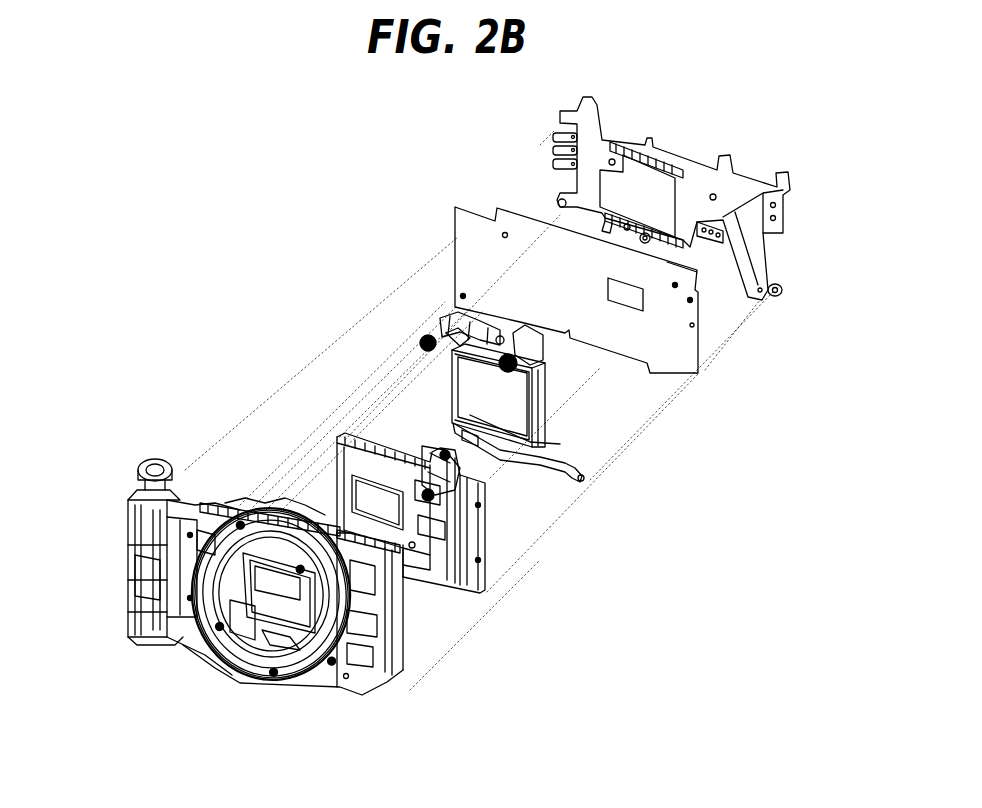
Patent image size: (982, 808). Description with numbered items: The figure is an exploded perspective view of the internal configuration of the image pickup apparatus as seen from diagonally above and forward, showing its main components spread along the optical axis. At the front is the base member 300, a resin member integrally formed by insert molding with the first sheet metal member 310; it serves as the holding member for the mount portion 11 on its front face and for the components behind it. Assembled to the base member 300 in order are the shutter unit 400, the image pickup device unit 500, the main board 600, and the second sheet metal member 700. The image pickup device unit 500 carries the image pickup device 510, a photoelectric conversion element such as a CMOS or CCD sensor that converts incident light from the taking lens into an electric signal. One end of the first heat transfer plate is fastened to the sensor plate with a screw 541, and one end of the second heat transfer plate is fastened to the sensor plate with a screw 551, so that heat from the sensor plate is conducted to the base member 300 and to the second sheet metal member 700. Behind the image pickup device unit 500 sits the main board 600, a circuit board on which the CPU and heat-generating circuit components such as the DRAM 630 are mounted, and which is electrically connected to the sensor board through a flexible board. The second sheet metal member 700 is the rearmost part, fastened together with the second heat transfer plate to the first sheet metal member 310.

The mount portion 11 is at (228, 663).
The base member 300 is at (135, 648).
The first sheet metal member 310 is at (162, 578).
The shutter unit 400 is at (485, 595).
The image pickup device unit 500 is at (586, 490).
The image pickup device 510 is at (515, 392).
The screw 541 is at (445, 335).
The screw 551 is at (450, 432).
The main board 600 is at (695, 383).
The DRAM 630 is at (630, 298).
The second sheet metal member 700 is at (790, 257).